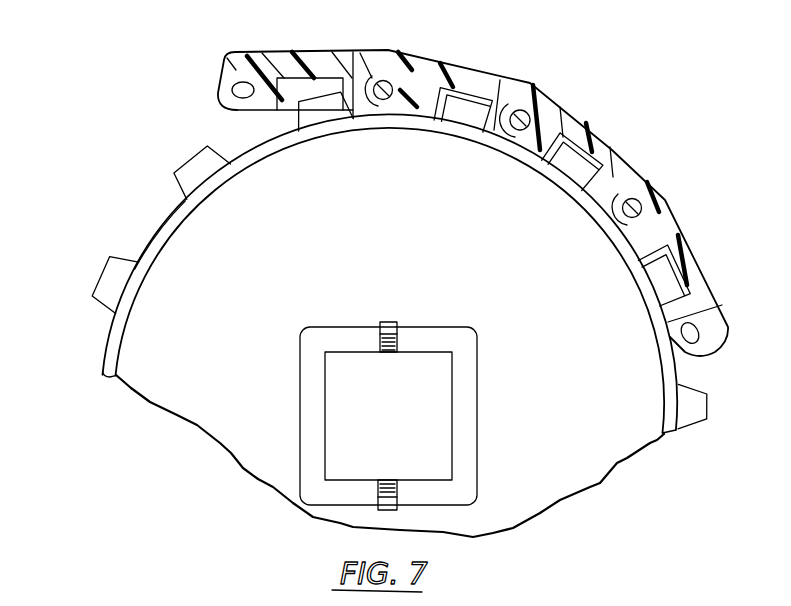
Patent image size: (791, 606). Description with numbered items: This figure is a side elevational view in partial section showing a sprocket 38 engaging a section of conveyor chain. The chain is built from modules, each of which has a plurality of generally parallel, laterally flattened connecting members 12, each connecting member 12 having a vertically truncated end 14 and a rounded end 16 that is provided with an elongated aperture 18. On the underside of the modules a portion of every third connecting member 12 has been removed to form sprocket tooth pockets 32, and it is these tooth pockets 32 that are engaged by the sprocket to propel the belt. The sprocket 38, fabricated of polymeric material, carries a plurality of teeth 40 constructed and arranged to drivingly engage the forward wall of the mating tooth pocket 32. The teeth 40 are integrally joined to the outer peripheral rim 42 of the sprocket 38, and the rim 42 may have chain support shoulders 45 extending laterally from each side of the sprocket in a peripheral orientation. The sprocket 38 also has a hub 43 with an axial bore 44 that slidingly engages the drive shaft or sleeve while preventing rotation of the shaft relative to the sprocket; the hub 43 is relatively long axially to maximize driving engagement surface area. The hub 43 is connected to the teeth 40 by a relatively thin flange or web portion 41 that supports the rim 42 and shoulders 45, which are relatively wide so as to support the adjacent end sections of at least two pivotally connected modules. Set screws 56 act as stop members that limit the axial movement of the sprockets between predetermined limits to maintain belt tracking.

The connecting member 12 is at (308, 50).
The vertically truncated end 14 is at (361, 50).
The rounded end 16 is at (218, 97).
The elongated aperture 18 is at (237, 87).
The sprocket tooth pocket 32 is at (290, 103).
The sprocket 38 is at (102, 338).
The tooth 40 is at (190, 160).
The flange or web portion 41 is at (530, 290).
The outer peripheral rim 42 is at (673, 382).
The hub 43 is at (470, 412).
The axial bore 44 is at (449, 450).
The chain support shoulder 45 is at (160, 230).
The set screw 56 is at (397, 323).